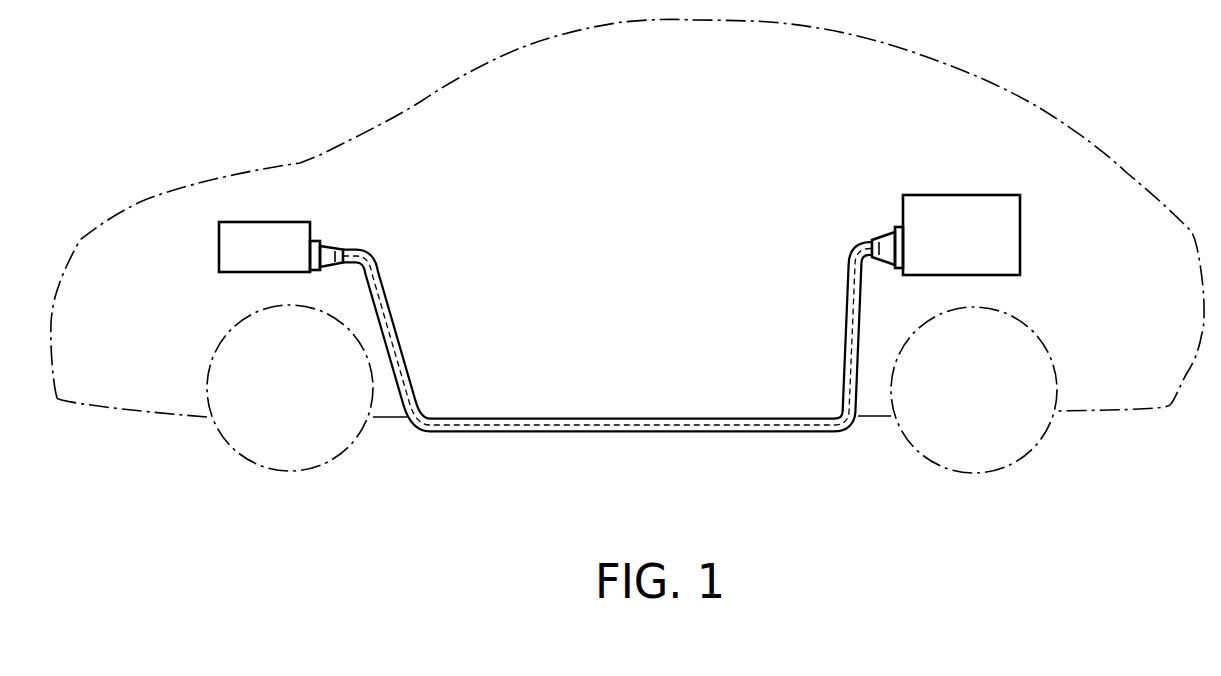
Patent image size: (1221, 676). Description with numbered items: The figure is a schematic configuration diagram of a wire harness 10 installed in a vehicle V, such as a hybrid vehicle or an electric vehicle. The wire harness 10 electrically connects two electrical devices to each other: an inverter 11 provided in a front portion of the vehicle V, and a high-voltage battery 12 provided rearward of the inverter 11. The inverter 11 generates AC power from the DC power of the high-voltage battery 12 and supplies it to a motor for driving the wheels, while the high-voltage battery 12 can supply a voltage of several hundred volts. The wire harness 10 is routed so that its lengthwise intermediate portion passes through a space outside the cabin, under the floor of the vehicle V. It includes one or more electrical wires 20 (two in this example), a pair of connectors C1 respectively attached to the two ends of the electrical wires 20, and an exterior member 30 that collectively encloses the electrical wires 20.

The vehicle V is at (932, 60).
The wire harness 10 is at (611, 276).
The inverter 11 is at (278, 222).
The high-voltage battery 12 is at (955, 195).
The electrical wire 20 is at (383, 315).
The exterior member 30 is at (378, 281).
The connector C1 is at (328, 242).